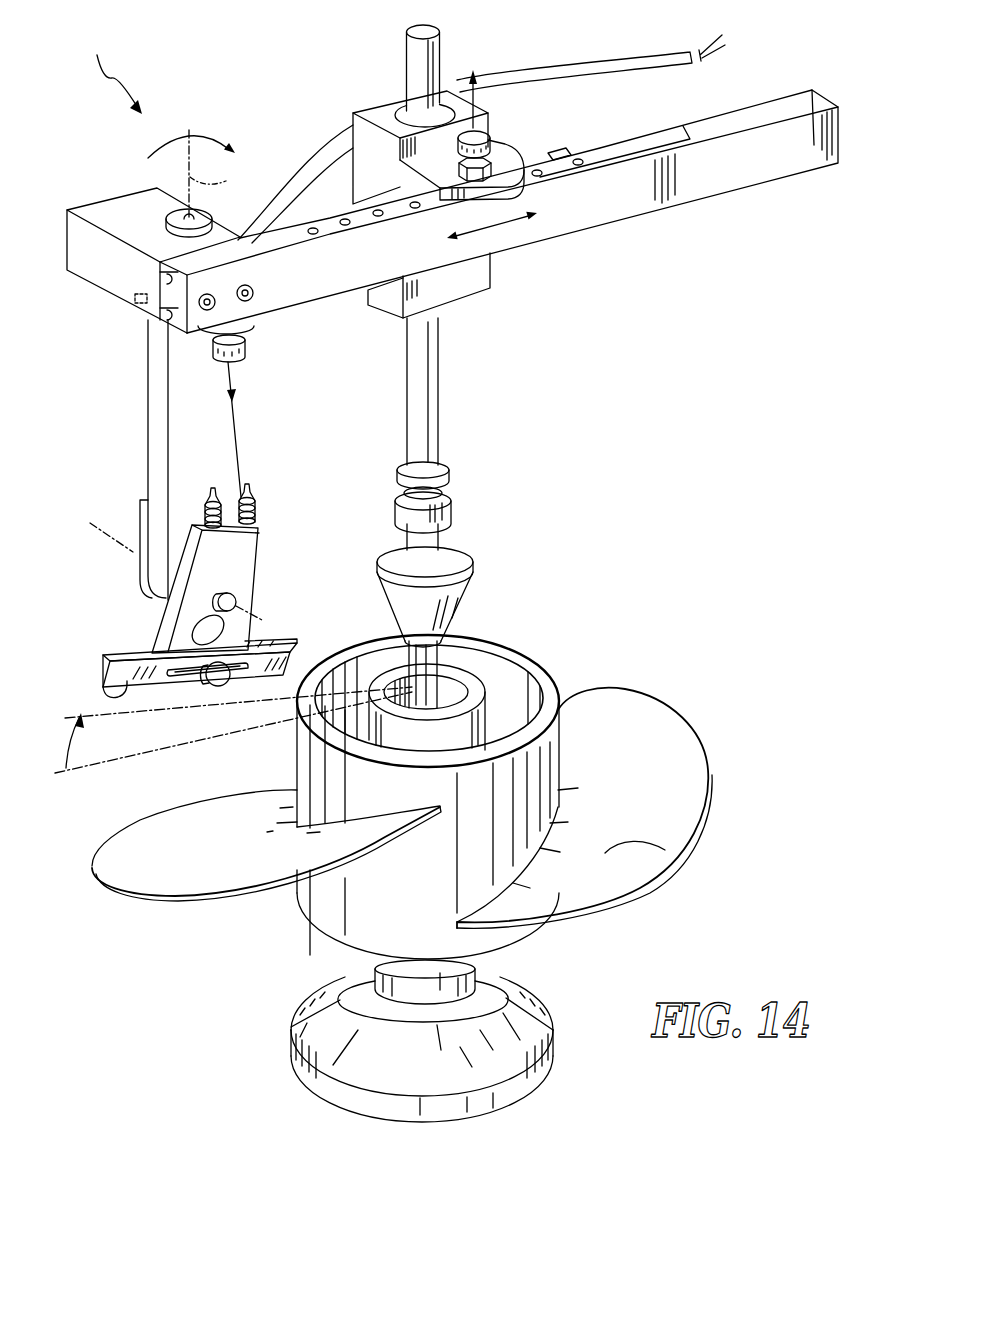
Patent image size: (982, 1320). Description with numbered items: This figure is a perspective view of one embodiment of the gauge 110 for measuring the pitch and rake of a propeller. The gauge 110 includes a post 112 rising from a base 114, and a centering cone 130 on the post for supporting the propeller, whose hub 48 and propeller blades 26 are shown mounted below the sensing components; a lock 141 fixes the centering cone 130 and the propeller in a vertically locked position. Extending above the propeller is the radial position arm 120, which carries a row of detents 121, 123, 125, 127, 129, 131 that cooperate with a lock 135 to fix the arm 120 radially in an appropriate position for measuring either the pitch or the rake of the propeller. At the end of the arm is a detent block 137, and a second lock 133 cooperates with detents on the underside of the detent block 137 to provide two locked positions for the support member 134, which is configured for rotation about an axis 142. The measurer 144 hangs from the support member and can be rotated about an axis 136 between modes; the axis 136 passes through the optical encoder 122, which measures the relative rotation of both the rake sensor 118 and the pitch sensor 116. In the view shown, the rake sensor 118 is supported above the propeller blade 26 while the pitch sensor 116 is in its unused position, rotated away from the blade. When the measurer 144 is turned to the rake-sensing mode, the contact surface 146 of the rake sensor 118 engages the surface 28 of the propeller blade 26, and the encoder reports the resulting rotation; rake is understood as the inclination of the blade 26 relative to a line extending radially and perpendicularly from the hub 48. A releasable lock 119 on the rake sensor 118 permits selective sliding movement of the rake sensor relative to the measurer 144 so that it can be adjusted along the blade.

The gauge 110 is at (106, 70).
The post 112 is at (430, 437).
The base 114 is at (413, 1077).
The pitch sensor 116 is at (272, 505).
The rake sensor 118 is at (120, 656).
The releasable lock 119 is at (217, 687).
The radial position arm 120 is at (780, 165).
The detent 121 is at (582, 158).
The optical encoder 122 is at (140, 512).
The detent 123 is at (539, 168).
The detent 125 is at (414, 209).
The detent 127 is at (383, 218).
The detent 129 is at (350, 228).
The detent 131 is at (313, 236).
The centering cone 130 is at (440, 622).
The second lock 133 is at (245, 352).
The support member 134 is at (216, 434).
The lock 135 is at (490, 132).
The axis 136 is at (262, 620).
The detent block 137 is at (118, 274).
The lock 141 is at (440, 512).
The axis 142 is at (206, 183).
The measurer 144 is at (118, 581).
The contact surface 146 is at (105, 664).
The propeller blade 26 is at (647, 723).
The surface 28 is at (665, 850).
The hub 48 is at (418, 874).